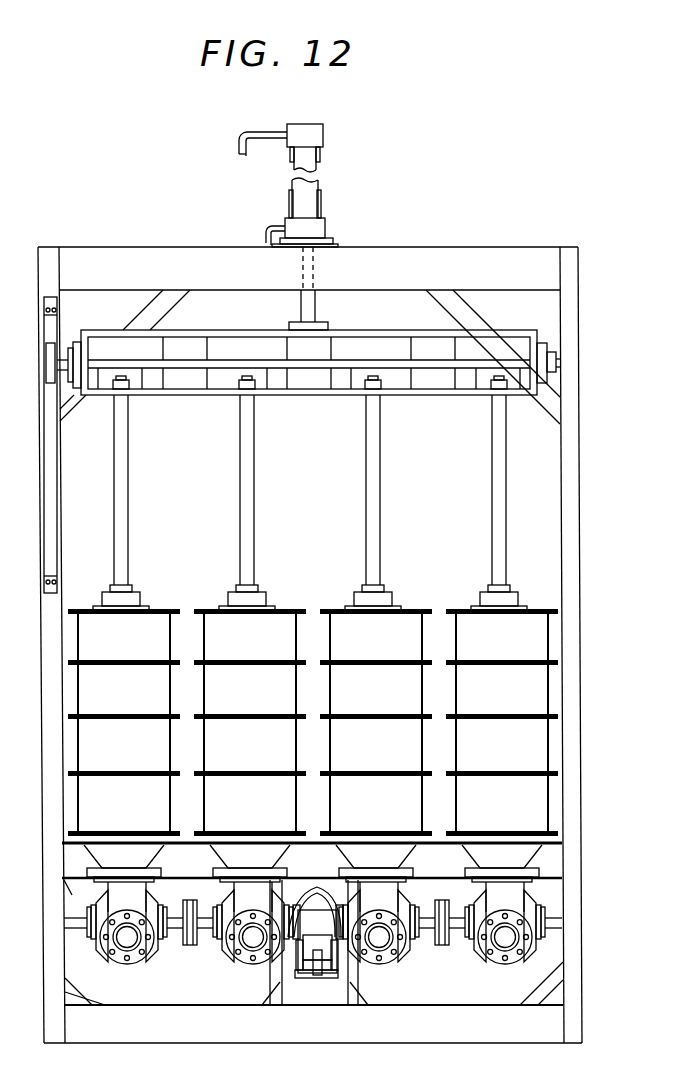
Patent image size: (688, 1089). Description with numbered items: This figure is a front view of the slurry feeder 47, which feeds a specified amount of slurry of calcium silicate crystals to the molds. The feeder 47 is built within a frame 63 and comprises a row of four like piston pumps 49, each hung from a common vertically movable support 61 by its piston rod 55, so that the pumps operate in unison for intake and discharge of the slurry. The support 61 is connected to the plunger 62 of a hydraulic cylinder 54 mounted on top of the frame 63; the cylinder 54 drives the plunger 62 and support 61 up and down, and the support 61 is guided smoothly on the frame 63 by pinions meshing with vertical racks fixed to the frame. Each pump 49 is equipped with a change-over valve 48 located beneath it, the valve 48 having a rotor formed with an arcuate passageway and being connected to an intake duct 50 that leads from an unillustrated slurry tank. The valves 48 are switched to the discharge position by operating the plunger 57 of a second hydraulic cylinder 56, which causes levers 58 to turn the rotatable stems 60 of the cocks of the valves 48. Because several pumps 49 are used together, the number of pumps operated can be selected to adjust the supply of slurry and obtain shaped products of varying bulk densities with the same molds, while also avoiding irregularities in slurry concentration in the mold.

The feeder 47 is at (457, 549).
The change-over valve 48 is at (158, 944).
The piston pump 49 is at (144, 622).
The intake duct 50 is at (132, 962).
The hydraulic cylinder 54 is at (319, 196).
The rod 55 is at (128, 492).
The hydraulic cylinder 56 is at (328, 978).
The plunger 57 is at (318, 972).
The lever 58 is at (332, 940).
The rotatable stem 60 is at (318, 910).
The vertically movable support 61 is at (331, 397).
The plunger 62 is at (316, 306).
The frame 63 is at (575, 480).